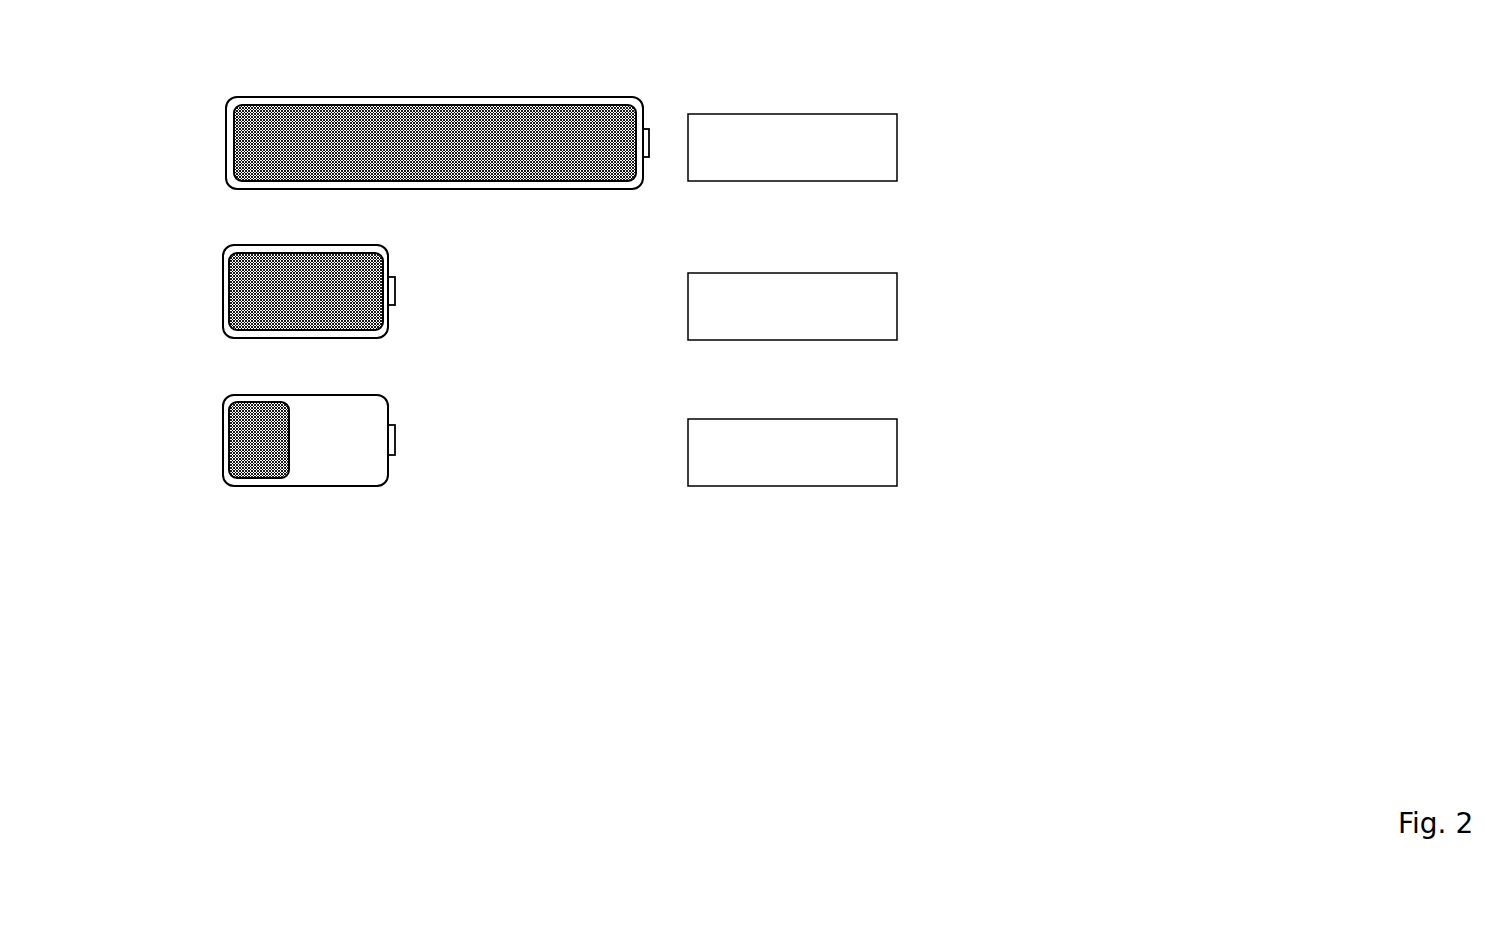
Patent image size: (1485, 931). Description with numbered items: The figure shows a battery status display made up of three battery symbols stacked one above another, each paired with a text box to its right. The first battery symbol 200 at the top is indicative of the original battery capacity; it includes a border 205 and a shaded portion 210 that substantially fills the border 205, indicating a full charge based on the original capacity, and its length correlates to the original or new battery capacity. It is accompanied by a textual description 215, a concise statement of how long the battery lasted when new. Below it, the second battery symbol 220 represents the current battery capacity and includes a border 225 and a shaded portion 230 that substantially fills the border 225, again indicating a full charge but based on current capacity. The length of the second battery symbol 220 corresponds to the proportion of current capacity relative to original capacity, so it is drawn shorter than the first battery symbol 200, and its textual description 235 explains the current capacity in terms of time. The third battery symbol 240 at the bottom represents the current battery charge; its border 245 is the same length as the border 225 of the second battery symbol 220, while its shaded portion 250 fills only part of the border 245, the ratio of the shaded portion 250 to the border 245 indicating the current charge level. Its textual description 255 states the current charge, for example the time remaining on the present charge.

The first battery symbol 200 is at (374, 109).
The border 205 is at (350, 97).
The shaded portion 210 is at (467, 105).
The textual description 215 is at (792, 147).
The second battery symbol 220 is at (275, 282).
The border 225 is at (380, 247).
The shaded portion 230 is at (383, 333).
The textual description 235 is at (792, 306).
The third battery symbol 240 is at (251, 454).
The border 245 is at (348, 487).
The shaded portion 250 is at (260, 478).
The textual description 255 is at (792, 452).